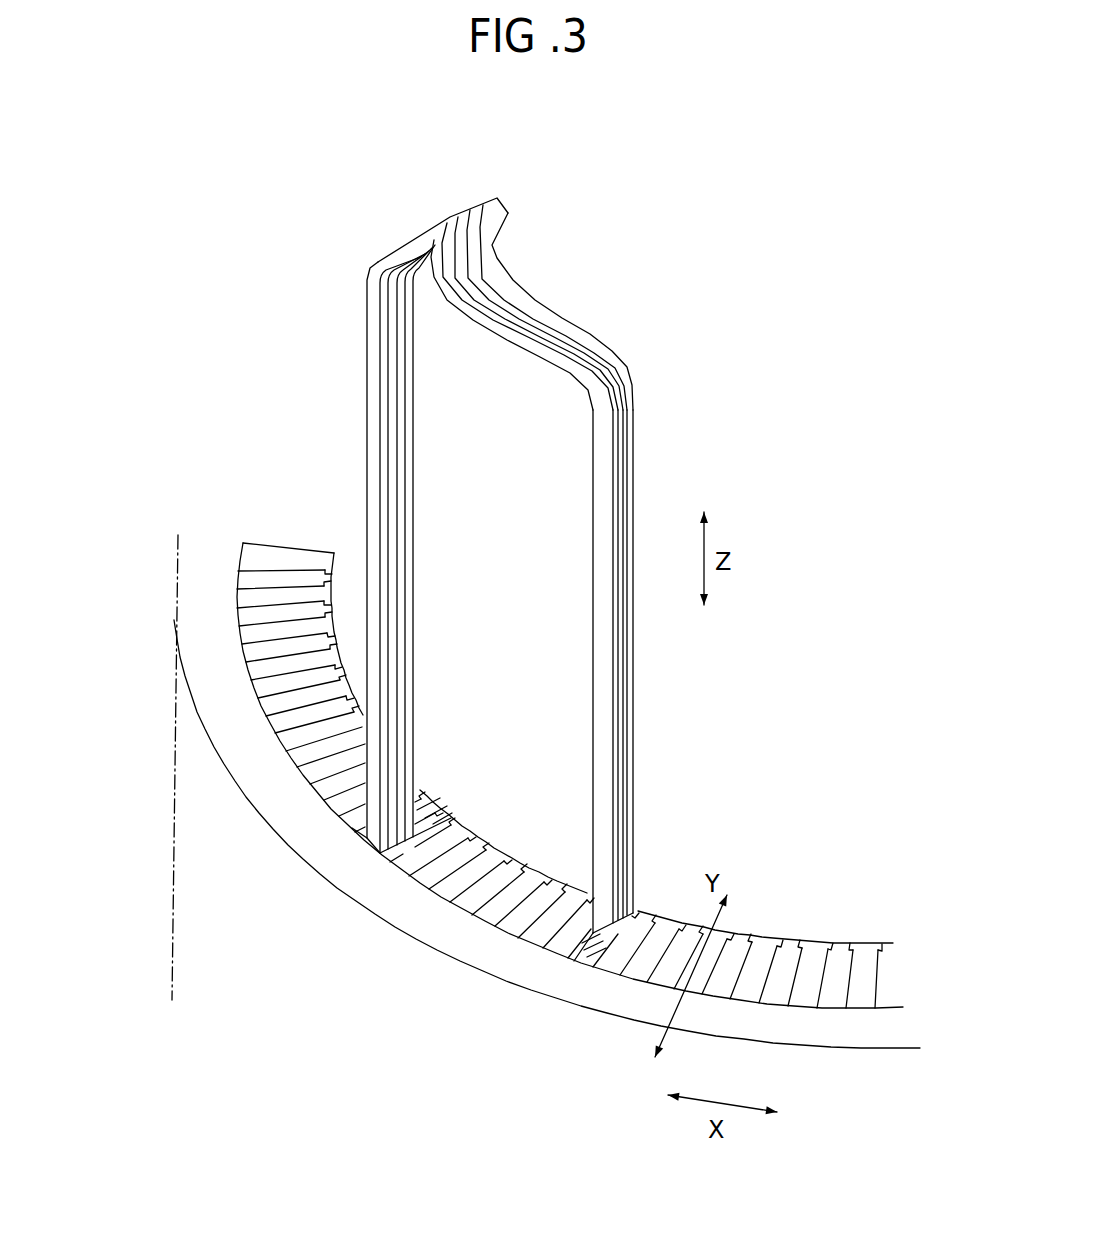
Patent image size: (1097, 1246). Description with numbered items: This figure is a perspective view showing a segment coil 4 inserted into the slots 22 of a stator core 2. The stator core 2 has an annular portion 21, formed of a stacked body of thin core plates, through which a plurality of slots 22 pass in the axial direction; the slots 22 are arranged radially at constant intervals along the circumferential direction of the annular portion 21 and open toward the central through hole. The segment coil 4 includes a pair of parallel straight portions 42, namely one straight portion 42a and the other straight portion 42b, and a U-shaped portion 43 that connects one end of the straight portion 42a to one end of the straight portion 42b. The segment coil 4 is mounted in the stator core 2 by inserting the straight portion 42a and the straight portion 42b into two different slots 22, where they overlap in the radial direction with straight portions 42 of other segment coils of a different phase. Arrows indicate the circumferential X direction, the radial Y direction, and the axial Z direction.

The stator core 2 is at (170, 890).
The annular portion 21 is at (455, 945).
The slots 22 is at (420, 816).
The segment coil 4 is at (641, 187).
The straight portions 42 is at (496, 589).
The straight portion 42a is at (366, 472).
The straight portion 42b is at (636, 720).
The U-shaped portion 43 is at (528, 295).